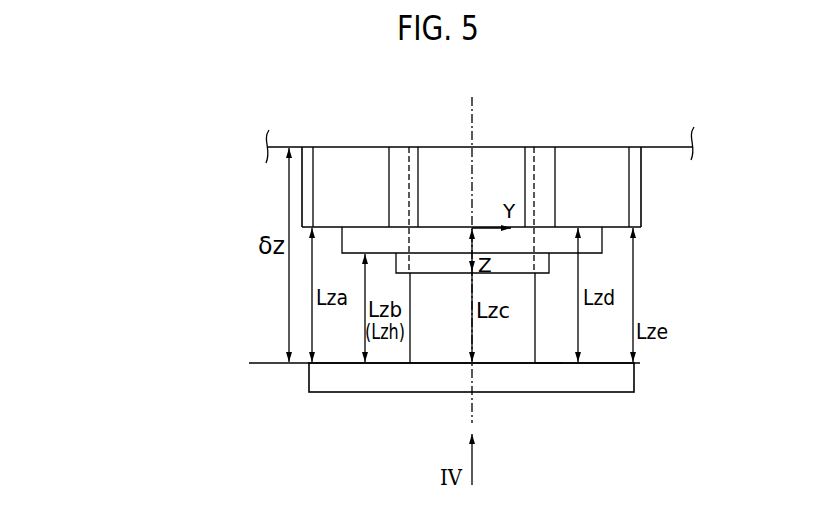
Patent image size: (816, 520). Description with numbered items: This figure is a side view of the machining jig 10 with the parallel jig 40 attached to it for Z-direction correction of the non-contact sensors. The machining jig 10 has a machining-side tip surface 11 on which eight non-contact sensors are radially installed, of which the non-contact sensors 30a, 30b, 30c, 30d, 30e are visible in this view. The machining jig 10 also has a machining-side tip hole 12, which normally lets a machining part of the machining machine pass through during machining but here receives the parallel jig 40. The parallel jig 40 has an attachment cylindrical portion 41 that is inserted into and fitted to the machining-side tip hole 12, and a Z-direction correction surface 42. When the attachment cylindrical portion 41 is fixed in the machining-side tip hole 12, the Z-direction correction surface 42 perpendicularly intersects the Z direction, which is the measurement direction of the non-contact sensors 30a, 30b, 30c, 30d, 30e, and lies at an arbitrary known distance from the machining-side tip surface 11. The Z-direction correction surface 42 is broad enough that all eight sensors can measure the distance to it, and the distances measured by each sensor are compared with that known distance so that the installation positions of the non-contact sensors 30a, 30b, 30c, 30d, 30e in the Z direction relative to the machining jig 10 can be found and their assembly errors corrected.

The machining jig 10 is at (288, 110).
The machining-side tip surface 11 is at (271, 148).
The machining-side tip hole 12 is at (534, 187).
The non-contact sensor 30a is at (306, 152).
The non-contact sensor 30b is at (368, 160).
The non-contact sensor 30c is at (447, 160).
The non-contact sensor 30d is at (590, 165).
The non-contact sensor 30e is at (641, 195).
The parallel jig 40 is at (639, 377).
The attachment cylindrical portion 41 is at (537, 286).
The Z-direction correction surface 42 is at (558, 362).